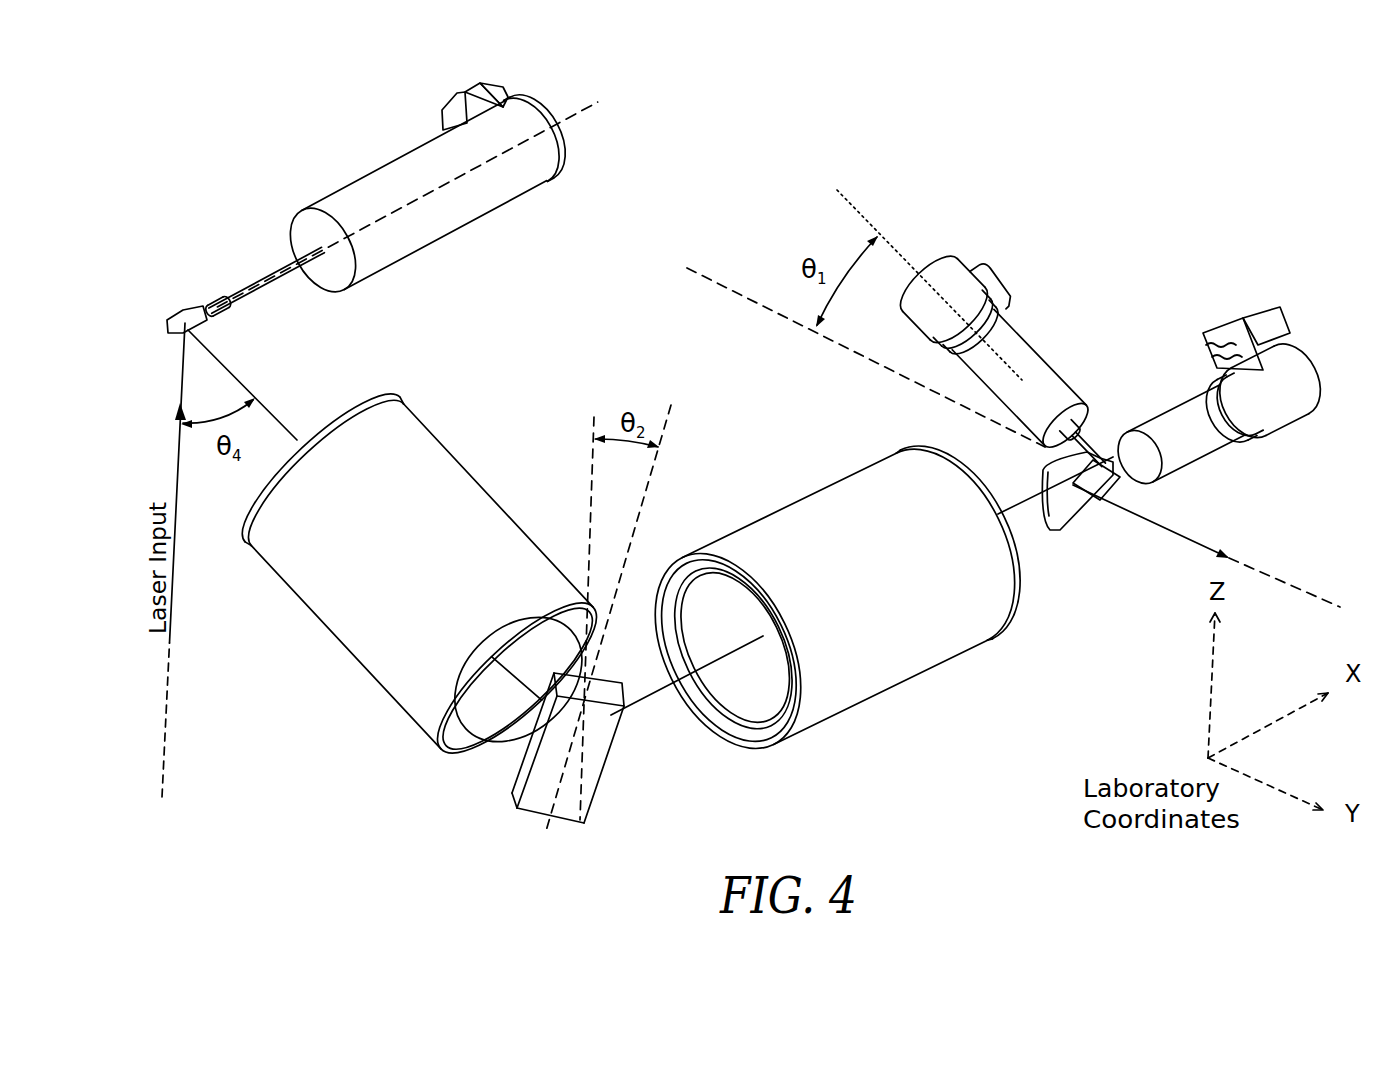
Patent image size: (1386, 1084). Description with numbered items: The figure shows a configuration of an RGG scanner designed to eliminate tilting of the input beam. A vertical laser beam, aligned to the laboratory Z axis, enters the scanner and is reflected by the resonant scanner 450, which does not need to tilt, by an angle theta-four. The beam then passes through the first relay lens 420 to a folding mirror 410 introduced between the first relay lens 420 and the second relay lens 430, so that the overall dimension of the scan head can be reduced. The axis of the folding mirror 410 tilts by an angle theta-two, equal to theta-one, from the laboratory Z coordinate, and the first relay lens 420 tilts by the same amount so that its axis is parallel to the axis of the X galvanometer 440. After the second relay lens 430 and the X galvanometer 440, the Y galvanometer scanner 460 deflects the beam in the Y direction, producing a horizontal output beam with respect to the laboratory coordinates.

The folding mirror 410 is at (561, 812).
The first relay lens 420 is at (403, 677).
The second relay lens 430 is at (833, 687).
The X galvanometer 440 is at (1033, 370).
The resonant scanner 450 is at (427, 232).
The Y galvanometer scanner 460 is at (1190, 447).